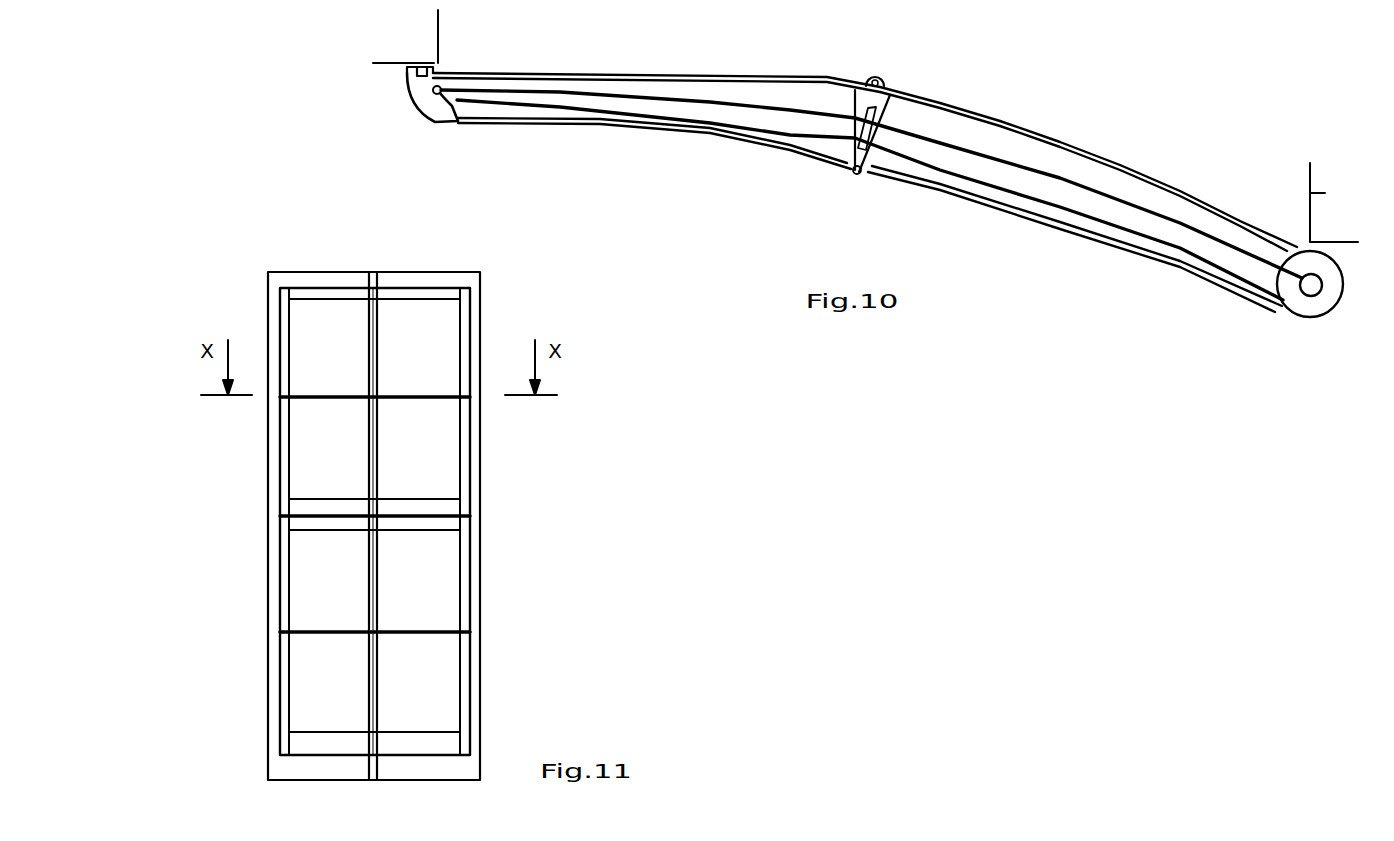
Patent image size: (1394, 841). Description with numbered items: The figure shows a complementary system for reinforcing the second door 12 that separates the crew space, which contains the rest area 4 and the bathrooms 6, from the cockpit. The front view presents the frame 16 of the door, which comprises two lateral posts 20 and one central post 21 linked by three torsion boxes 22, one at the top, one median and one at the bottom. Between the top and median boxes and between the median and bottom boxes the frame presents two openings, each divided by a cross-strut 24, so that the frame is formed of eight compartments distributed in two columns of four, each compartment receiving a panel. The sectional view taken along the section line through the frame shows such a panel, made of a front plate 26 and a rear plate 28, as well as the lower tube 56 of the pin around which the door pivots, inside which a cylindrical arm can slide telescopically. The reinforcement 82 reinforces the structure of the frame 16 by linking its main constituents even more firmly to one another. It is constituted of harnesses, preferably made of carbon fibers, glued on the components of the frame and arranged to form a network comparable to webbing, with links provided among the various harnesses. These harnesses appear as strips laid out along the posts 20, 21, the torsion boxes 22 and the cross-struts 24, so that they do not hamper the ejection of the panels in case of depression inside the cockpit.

In FIG. 10, the rest area 4 is at (1310, 192).
In FIG. 10, the bathrooms 6 is at (422, 33).
In FIG. 11, the second door 12 is at (252, 633).
In FIG. 11, the frame 16 is at (470, 282).
In FIG. 10, the lateral posts 20 is at (432, 108).
In FIG. 11, the lateral posts 20 is at (275, 738).
In FIG. 11, the central post 21 is at (373, 688).
In FIG. 10, the torsion boxes 22 is at (1143, 258).
In FIG. 11, the torsion boxes 22 is at (400, 507).
In FIG. 11, the cross-strut 24 is at (413, 397).
In FIG. 10, the front plate 26 is at (648, 74).
In FIG. 10, the rear plate 28 is at (668, 123).
In FIG. 10, the lower tube 56 is at (1313, 283).
In FIG. 10, the reinforcement 82 is at (510, 103).
In FIG. 11, the reinforcement 82 is at (432, 517).